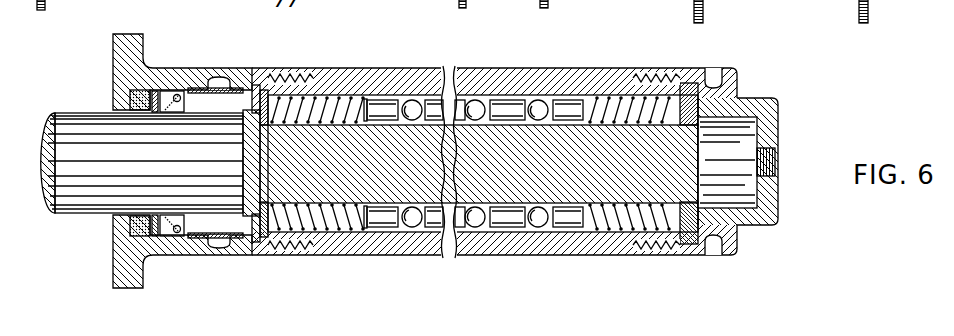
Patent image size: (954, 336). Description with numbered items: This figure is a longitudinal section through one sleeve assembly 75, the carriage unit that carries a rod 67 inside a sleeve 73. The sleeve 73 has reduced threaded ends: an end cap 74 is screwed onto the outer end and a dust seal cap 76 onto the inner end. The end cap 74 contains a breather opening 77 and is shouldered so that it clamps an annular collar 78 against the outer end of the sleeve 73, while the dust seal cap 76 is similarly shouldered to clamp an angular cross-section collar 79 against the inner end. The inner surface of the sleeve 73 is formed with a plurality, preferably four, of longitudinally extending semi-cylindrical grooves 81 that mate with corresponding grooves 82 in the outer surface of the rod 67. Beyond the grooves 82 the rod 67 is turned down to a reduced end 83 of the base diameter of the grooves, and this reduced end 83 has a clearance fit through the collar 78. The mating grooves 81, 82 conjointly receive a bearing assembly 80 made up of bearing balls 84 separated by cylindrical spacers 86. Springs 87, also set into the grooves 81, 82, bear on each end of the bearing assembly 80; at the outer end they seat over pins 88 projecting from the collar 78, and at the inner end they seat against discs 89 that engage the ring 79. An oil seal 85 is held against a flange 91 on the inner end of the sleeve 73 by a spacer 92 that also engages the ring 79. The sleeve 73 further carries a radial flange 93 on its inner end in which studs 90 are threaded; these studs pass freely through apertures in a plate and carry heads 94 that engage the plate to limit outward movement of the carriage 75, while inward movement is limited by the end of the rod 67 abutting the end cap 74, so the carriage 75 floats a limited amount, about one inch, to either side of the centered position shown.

The rod 67 is at (684, 150).
The sleeve 73 is at (549, 78).
The end cap 74 is at (738, 78).
The sleeve assembly 75 is at (285, 263).
The dust seal cap 76 is at (239, 80).
The breather opening 77 is at (777, 157).
The annular collar 78 is at (694, 72).
The angular cross-section collar 79 is at (251, 253).
The bearing assembly 80 is at (516, 86).
The longitudinally extending semi-cylindrical grooves 81 is at (340, 100).
The grooves 82 is at (360, 108).
The reduced end 83 is at (681, 176).
The bearing balls 84 is at (572, 93).
The oil seal 85 is at (140, 230).
The cylindrical spacers 86 is at (502, 107).
The springs 87 is at (302, 98).
The pins 88 is at (665, 232).
The discs 89 is at (268, 78).
The studs 90 is at (483, 6).
The flange 91 is at (118, 228).
The spacer 92 is at (195, 83).
The radial flange 93 is at (125, 37).
The heads 94 is at (415, 6).